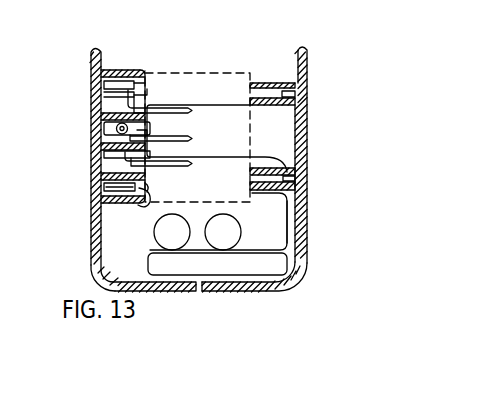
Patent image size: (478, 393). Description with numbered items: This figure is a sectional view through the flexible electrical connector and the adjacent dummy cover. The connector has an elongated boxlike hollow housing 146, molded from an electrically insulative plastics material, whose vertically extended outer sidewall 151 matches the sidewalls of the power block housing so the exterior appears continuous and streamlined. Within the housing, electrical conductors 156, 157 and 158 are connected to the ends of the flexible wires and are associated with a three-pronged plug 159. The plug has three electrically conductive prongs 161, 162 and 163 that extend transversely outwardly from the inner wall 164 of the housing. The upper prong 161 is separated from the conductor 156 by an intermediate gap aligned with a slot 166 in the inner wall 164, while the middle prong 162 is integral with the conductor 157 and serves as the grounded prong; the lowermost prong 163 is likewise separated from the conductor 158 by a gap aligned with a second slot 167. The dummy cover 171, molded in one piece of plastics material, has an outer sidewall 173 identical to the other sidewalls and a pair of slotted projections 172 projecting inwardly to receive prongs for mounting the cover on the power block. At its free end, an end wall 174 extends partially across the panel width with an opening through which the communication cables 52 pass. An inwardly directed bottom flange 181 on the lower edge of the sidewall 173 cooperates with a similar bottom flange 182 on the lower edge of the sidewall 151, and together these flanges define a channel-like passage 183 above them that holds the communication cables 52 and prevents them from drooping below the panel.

The communication cables 52 is at (177, 230).
The housing 146 is at (96, 90).
The outer sidewall 151 is at (92, 228).
The electrical conductor 156 is at (117, 70).
The electrical conductor 157 is at (110, 131).
The electrical conductor 158 is at (103, 193).
The three-pronged plug 159 is at (148, 64).
The upper prong 161 is at (157, 110).
The middle prong 162 is at (172, 140).
The lowermost prong 163 is at (159, 165).
The inner wall 164 is at (143, 122).
The slot 166 is at (147, 92).
The slot 167 is at (146, 203).
The dummy cover 171 is at (308, 125).
The slotted projections 172 is at (287, 86).
The outer sidewall 173 is at (302, 205).
The end wall 174 is at (217, 263).
The bottom flange 181 is at (273, 292).
The bottom flange 182 is at (176, 290).
The passage 183 is at (274, 222).